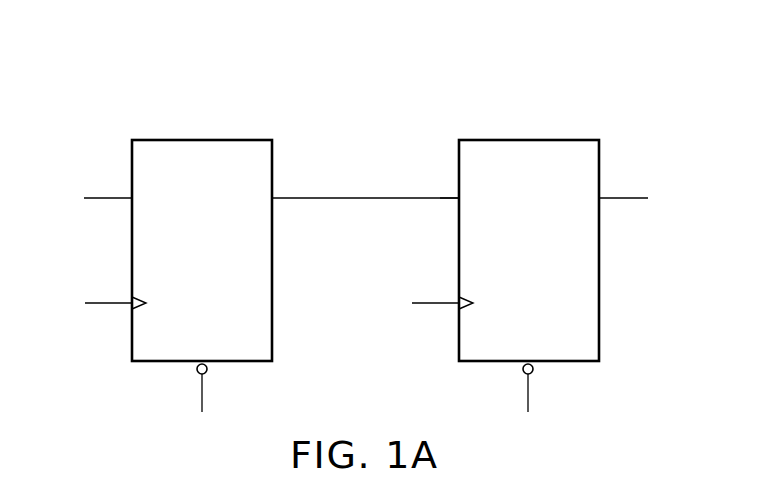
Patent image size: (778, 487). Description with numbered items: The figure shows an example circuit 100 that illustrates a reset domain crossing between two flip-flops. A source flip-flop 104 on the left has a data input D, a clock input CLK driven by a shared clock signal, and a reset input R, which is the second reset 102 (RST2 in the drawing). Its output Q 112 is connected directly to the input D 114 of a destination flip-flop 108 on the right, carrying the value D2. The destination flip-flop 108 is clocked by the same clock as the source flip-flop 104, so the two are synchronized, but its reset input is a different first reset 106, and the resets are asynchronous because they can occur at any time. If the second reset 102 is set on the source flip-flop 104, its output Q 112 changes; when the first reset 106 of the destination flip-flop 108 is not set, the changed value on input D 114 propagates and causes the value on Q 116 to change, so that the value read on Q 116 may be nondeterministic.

The example circuit 100 is at (302, 72).
The reset 2 102 is at (196, 380).
The source flip-flop 104 is at (190, 138).
The reset 1 106 is at (534, 378).
The destination flip-flop 108 is at (540, 138).
The output Q 112 is at (277, 193).
The input D 114 is at (454, 203).
The Q 116 is at (634, 178).